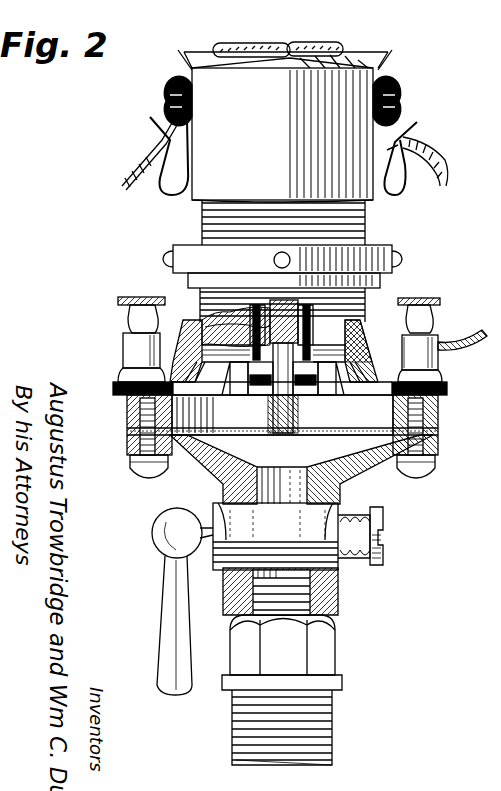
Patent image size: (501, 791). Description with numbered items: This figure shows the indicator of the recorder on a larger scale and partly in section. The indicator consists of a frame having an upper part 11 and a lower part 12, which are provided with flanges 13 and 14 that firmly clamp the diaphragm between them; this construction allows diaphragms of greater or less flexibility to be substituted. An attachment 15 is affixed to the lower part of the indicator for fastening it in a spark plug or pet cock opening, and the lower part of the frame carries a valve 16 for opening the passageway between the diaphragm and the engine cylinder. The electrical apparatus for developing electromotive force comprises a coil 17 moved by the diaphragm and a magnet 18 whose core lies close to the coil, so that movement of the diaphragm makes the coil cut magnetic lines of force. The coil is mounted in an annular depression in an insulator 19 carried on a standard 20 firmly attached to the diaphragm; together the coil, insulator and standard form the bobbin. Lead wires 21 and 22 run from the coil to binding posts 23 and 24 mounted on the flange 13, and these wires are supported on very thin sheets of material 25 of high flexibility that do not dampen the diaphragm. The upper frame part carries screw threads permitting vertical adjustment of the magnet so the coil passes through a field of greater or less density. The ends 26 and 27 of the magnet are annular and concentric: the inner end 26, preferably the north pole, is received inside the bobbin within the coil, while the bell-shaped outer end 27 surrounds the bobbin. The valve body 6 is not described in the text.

The valve casing 6 is at (360, 430).
The upper part of frame 11 is at (373, 338).
The lower part of frame 12 is at (372, 467).
The flange 13 is at (133, 404).
The flange 14 is at (130, 446).
The attachment 15 is at (325, 665).
The valve 16 is at (215, 515).
The coil 17 is at (196, 325).
The magnet 18 is at (215, 181).
The insulator 19 is at (207, 308).
The standard 20 is at (291, 418).
The lead wire 21 is at (258, 373).
The lead wire 22 is at (313, 364).
The binding post 23 is at (128, 357).
The binding post 24 is at (440, 362).
The thin sheets of material 25 is at (118, 378).
The inner end of magnet 26 is at (376, 318).
The outer end of magnet 27 is at (441, 334).